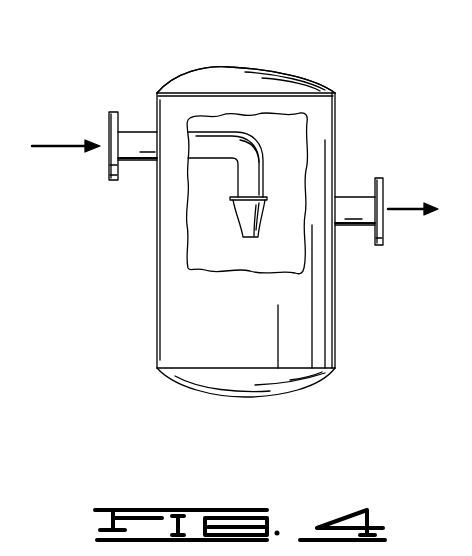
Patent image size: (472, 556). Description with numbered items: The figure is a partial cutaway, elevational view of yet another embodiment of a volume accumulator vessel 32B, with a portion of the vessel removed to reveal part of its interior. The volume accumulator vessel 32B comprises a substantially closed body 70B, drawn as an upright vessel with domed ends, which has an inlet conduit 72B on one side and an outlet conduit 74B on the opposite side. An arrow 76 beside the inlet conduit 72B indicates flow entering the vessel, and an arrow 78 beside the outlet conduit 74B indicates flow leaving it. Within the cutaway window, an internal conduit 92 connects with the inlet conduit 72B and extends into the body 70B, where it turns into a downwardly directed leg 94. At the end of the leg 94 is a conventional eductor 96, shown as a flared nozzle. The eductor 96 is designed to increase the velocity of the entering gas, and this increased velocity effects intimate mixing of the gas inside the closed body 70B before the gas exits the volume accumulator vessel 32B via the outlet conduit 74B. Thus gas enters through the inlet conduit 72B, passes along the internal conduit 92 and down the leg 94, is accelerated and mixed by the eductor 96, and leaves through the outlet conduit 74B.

The volume accumulator vessel 32B is at (187, 70).
The substantially closed body 70B is at (173, 330).
The inlet conduit 72B is at (114, 112).
The outlet conduit 74B is at (378, 178).
The inlet flow 76 is at (51, 147).
The outlet flow 78 is at (406, 205).
The internal conduit 92 is at (221, 146).
The downwardly directed leg 94 is at (251, 176).
The eductor 96 is at (250, 218).